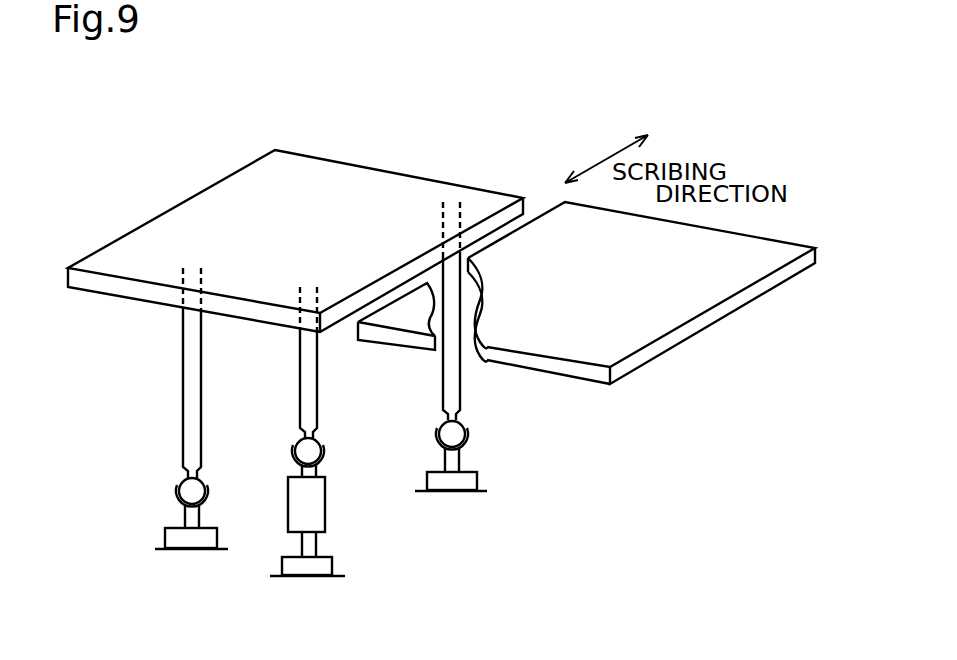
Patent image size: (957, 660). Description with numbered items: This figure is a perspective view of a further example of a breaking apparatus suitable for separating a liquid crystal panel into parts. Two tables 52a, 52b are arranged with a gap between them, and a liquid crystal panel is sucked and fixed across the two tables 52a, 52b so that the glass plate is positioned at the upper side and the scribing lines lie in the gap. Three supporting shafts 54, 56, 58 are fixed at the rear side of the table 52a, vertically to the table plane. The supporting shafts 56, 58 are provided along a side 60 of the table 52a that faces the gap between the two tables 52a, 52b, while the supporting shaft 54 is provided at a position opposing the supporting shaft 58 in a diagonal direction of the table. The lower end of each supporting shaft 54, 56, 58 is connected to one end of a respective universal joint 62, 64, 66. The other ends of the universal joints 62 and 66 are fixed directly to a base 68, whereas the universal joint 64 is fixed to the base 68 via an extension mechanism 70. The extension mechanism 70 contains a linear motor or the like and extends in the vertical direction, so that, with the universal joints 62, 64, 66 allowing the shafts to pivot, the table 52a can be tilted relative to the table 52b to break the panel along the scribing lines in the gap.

The table 52a is at (227, 175).
The table 52b is at (758, 298).
The supporting shaft 54 is at (180, 383).
The supporting shaft 56 is at (290, 366).
The supporting shaft 58 is at (438, 373).
The side 60 is at (517, 208).
The universal joint 62 is at (173, 490).
The universal joint 64 is at (283, 449).
The universal joint 66 is at (431, 433).
The base 68 is at (145, 541).
The extension mechanism 70 is at (336, 510).